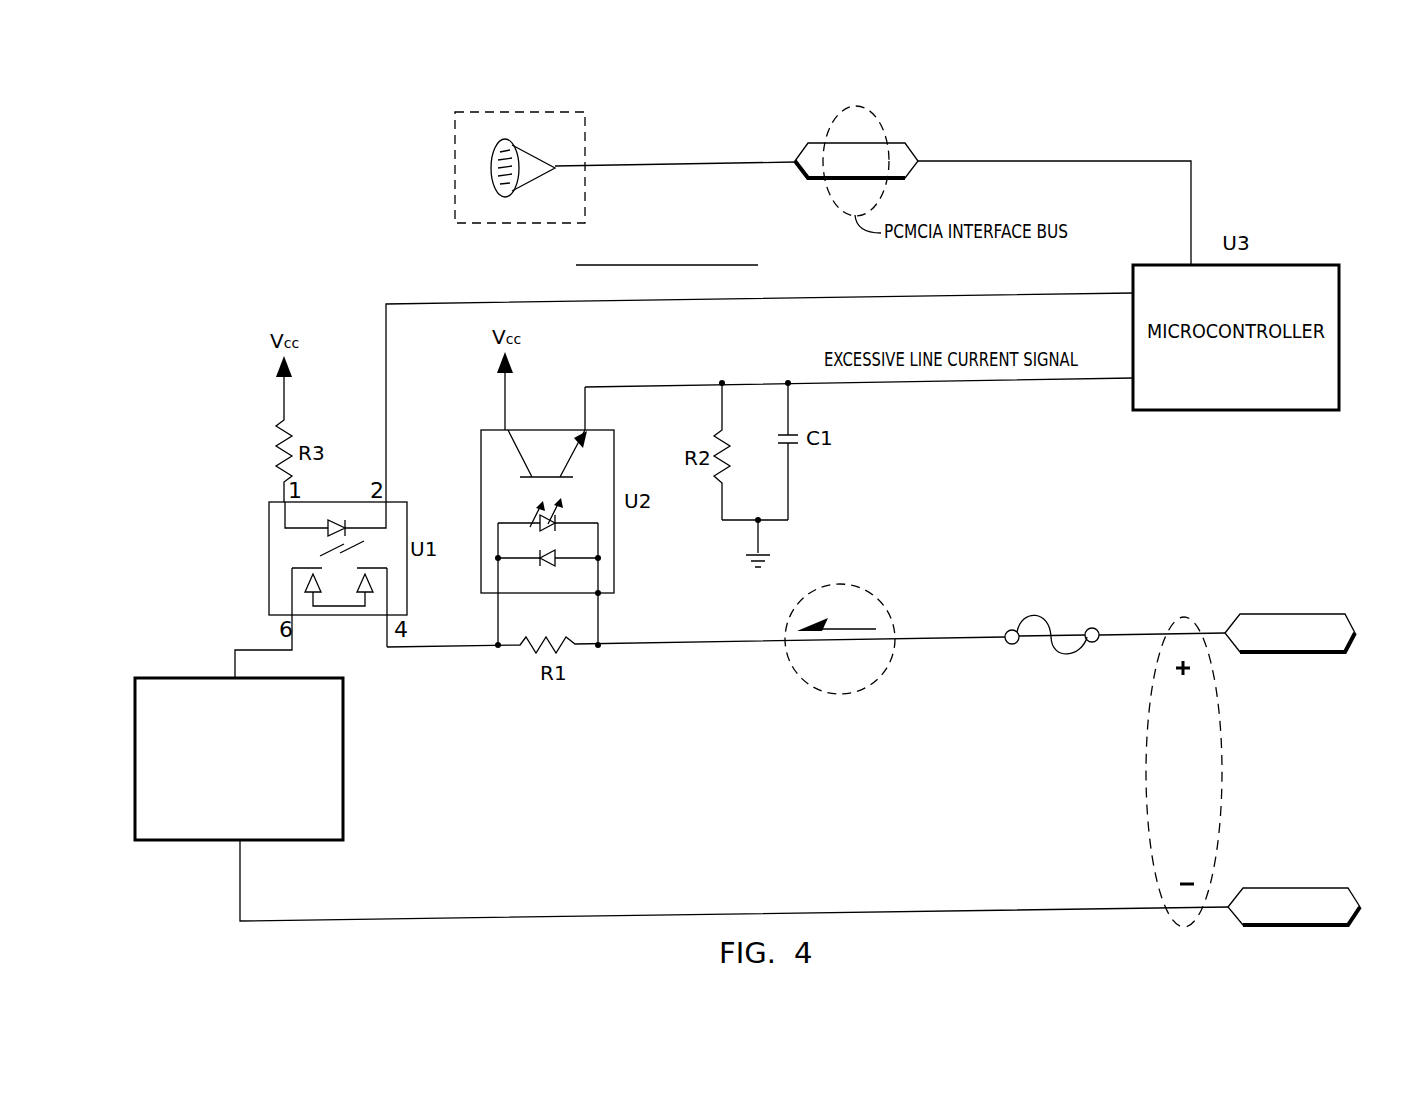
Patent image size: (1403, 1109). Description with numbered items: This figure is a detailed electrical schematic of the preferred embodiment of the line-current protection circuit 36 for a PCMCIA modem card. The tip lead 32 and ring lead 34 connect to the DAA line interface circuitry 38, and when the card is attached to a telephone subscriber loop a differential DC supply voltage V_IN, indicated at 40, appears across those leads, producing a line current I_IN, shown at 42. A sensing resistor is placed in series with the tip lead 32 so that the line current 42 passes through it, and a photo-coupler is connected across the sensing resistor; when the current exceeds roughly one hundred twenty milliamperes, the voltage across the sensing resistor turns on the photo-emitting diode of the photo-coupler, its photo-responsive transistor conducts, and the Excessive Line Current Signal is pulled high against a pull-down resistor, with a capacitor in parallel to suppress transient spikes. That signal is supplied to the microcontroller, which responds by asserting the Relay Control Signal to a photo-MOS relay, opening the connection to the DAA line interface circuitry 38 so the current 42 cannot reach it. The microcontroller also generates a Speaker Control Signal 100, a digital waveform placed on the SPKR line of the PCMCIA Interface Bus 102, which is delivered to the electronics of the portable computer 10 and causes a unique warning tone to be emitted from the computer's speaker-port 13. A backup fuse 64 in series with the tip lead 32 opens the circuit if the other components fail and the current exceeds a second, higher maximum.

The portable computer 10 is at (504, 228).
The speaker-port 13 is at (488, 141).
The tip lead 32 is at (426, 304).
The ring lead 34 is at (1328, 897).
The protection circuit 36 is at (1052, 281).
The DAA line interface circuitry 38 is at (320, 714).
The differential DC supply voltage V_IN 40 is at (1150, 840).
The differential current I_IN 42 is at (880, 600).
The fuse 64 is at (1053, 645).
The Speaker Control Signal 100 is at (1191, 167).
The SPKR signal on PCMCIA Interface Bus 102 is at (815, 147).